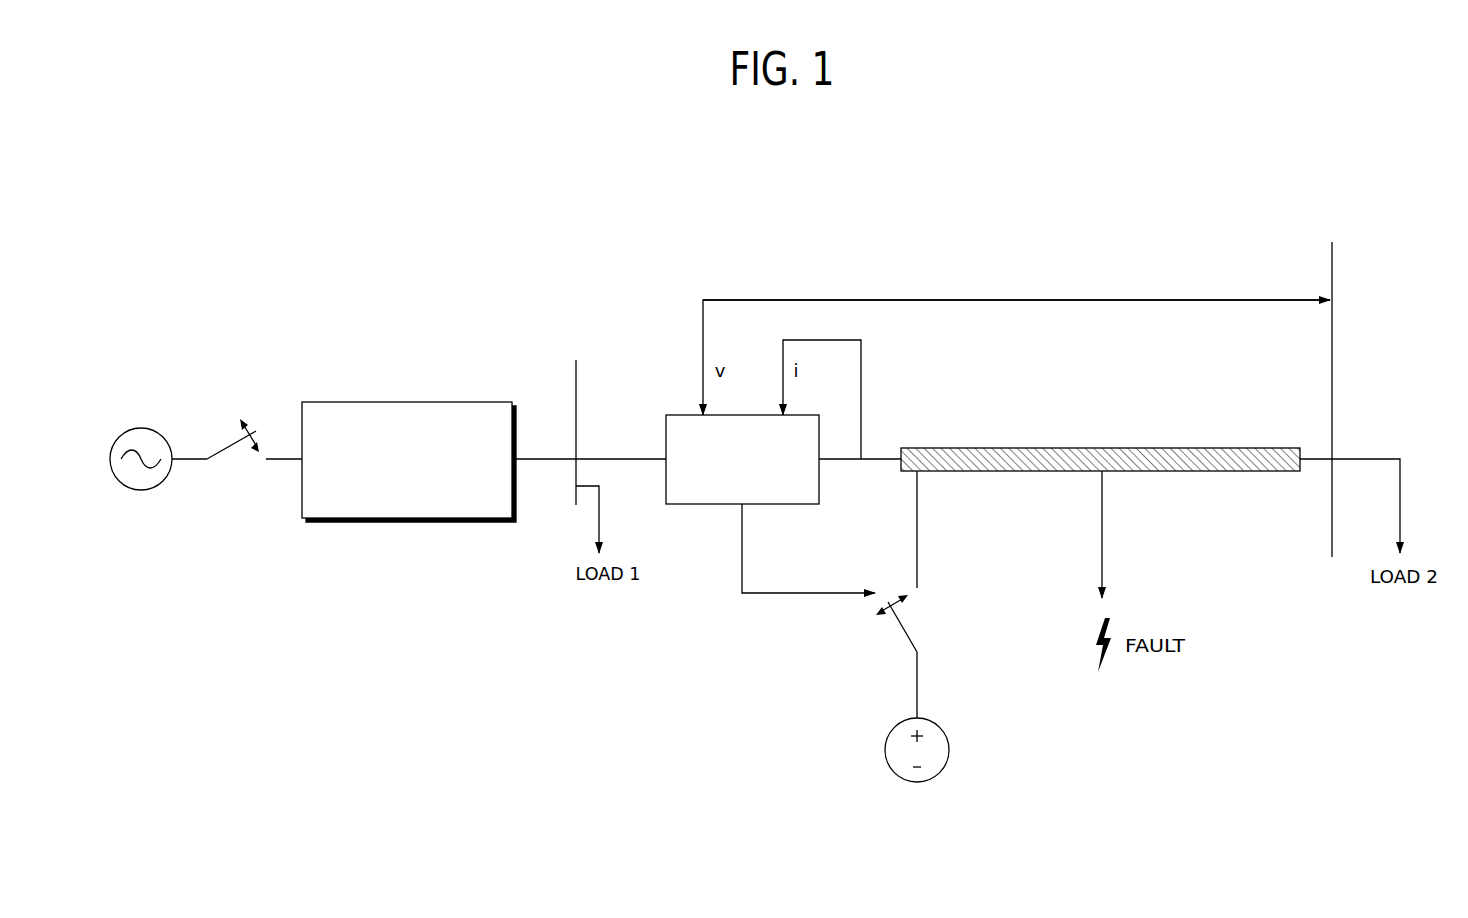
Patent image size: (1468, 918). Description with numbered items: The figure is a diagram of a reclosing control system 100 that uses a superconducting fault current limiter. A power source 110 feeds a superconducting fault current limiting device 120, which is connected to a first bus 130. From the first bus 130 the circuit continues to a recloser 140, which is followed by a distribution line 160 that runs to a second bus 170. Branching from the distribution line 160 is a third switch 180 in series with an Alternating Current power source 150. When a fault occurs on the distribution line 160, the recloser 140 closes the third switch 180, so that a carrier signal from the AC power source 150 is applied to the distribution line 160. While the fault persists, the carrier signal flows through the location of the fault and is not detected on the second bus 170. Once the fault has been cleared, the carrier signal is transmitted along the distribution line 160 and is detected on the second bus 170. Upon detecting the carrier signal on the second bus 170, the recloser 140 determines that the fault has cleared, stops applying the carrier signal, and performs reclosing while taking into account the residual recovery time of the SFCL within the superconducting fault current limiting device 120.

The reclosing control system 100 is at (1252, 687).
The power source 110 is at (141, 428).
The superconducting fault current limiting device 120 is at (412, 522).
The first bus 130 is at (578, 390).
The recloser 140 is at (700, 506).
The Alternating Current (AC) power source 150 is at (949, 750).
The distribution line 160 is at (1140, 448).
The second bus 170 is at (1334, 364).
The third switch 180 is at (897, 628).